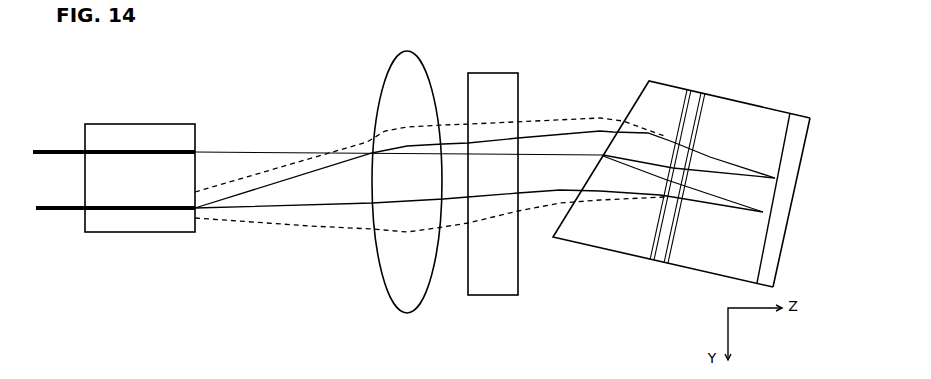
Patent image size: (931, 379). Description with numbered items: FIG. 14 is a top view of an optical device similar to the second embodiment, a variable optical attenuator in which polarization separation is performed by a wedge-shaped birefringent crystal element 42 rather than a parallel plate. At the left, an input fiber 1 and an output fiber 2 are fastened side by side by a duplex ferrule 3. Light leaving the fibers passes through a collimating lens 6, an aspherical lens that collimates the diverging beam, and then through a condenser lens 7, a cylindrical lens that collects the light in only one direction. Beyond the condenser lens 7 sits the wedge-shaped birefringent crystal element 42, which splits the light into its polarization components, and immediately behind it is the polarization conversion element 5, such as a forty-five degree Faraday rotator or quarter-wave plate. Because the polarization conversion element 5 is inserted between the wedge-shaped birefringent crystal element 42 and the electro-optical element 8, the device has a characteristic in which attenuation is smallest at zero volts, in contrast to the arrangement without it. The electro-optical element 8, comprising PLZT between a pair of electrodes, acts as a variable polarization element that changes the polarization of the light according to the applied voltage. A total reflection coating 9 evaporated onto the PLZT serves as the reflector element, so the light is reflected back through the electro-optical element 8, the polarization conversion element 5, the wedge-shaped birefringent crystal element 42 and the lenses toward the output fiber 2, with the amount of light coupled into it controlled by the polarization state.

The input fiber 1 is at (114, 139).
The output fiber 2 is at (115, 199).
The duplex ferrule 3 is at (140, 168).
The polarization conversion element 5 is at (700, 93).
The collimating lens 6 is at (407, 170).
The condenser lens 7 is at (493, 173).
The electro-optical element 8 is at (770, 178).
The total reflection coating 9 is at (791, 202).
The wedge-shaped birefringent crystal element 42 is at (681, 173).